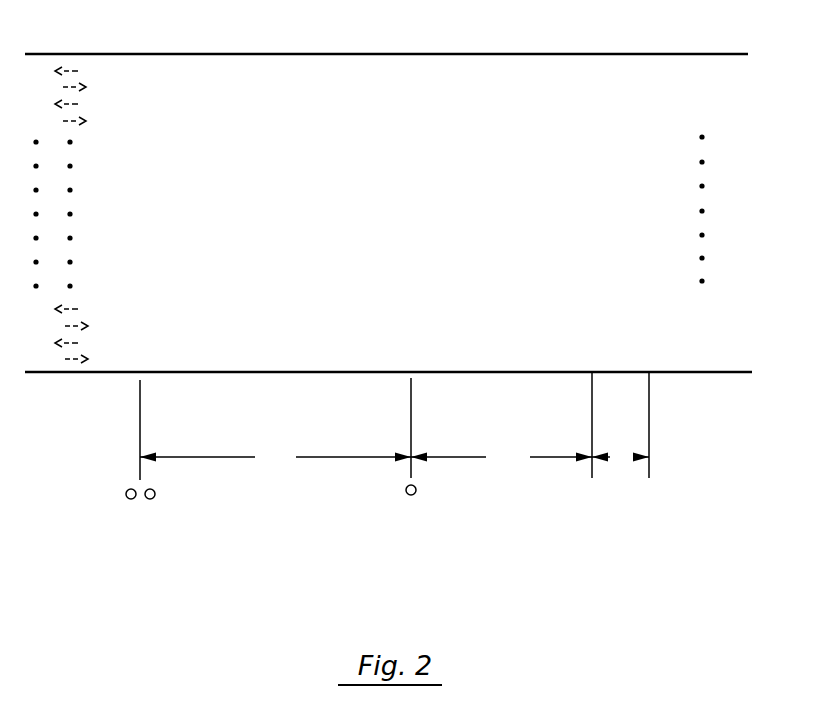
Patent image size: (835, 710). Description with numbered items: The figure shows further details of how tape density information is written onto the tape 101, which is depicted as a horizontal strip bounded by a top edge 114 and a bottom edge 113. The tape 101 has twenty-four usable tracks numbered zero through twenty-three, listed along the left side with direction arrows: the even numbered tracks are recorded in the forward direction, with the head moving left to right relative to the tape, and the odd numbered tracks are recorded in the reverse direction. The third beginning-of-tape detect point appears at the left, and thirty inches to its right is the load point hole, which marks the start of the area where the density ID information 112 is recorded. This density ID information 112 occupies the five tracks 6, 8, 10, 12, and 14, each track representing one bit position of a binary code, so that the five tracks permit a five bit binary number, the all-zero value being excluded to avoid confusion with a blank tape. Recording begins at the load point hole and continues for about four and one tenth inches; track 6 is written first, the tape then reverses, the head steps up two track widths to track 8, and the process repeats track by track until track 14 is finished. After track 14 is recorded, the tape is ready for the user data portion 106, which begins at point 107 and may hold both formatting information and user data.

The tape 101 is at (260, 231).
The top edge 114 is at (68, 52).
The leading edge of the user data region 107 is at (648, 52).
The user data region 106 is at (747, 134).
The density ID information 112 is at (477, 214).
The bottom edge 113 is at (113, 373).
The track 14 is at (406, 183).
The track 12 is at (406, 209).
The track 10 is at (406, 235).
The track 8 is at (406, 261).
The track 6 is at (406, 286).